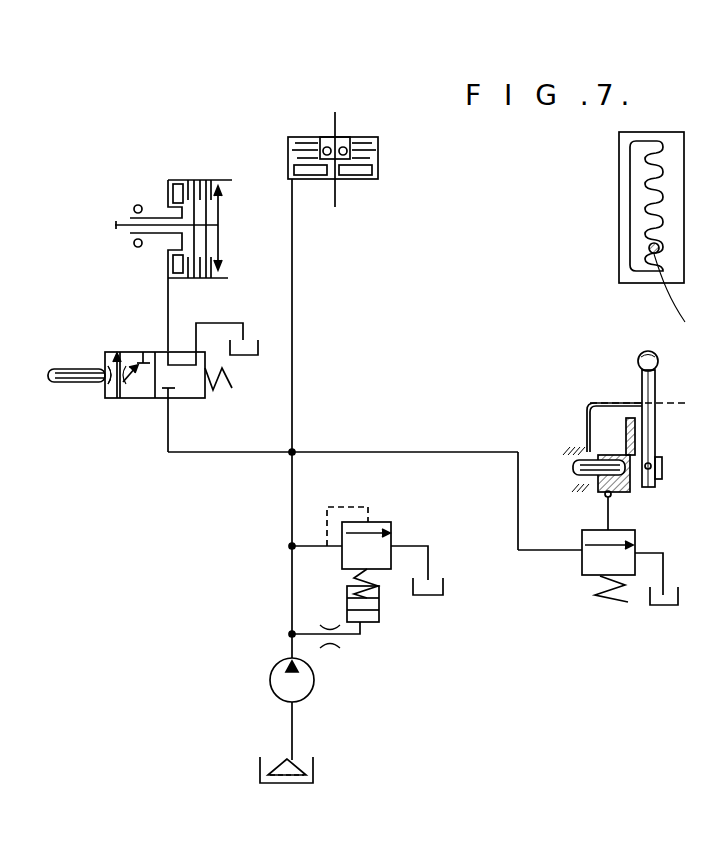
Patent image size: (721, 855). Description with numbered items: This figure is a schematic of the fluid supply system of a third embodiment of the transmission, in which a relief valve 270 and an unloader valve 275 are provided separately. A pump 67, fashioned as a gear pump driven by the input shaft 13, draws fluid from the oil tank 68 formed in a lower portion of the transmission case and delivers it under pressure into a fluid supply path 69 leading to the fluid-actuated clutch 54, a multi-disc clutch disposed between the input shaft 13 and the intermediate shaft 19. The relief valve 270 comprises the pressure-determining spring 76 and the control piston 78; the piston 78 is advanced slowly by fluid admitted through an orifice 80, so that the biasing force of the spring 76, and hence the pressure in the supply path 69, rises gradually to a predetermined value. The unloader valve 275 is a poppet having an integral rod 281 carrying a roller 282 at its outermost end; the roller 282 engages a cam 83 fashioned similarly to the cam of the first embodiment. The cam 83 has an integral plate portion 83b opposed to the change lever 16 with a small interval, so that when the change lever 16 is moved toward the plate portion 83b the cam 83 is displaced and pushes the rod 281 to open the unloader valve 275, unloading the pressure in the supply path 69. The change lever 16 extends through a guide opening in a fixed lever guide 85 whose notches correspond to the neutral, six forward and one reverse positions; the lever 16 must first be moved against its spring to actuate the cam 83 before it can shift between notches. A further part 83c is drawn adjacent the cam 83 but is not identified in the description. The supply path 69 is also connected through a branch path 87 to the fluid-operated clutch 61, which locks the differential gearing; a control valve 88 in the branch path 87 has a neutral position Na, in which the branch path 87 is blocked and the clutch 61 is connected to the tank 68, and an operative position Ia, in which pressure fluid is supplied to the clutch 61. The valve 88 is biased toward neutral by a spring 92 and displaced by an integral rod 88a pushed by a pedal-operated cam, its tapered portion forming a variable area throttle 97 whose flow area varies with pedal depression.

The input shaft 13 is at (336, 122).
The change lever 16 is at (658, 356).
The intermediate shaft 19 is at (336, 198).
The fluid-actuated clutch 54 is at (378, 148).
The fluid-operated clutch 61 is at (207, 180).
The pump 67 is at (269, 686).
The oil tank 68 is at (314, 763).
The fluid supply path 69 is at (293, 400).
The pressure-determining spring 76 is at (360, 573).
The control piston 78 is at (367, 603).
The orifice 80 is at (323, 645).
The cam 83 is at (627, 422).
The plate portion 83b is at (608, 403).
The cam block 83c is at (630, 503).
The lever guide 85 is at (623, 275).
The branch path 87 is at (195, 453).
The control valve 88 is at (105, 352).
The rod 88a is at (70, 371).
The spring 92 is at (220, 380).
The variable area throttle 97 is at (135, 383).
The relief valve 270 is at (392, 525).
The unloader valve 275 is at (635, 530).
The rod 281 is at (602, 513).
The roller 282 is at (590, 492).